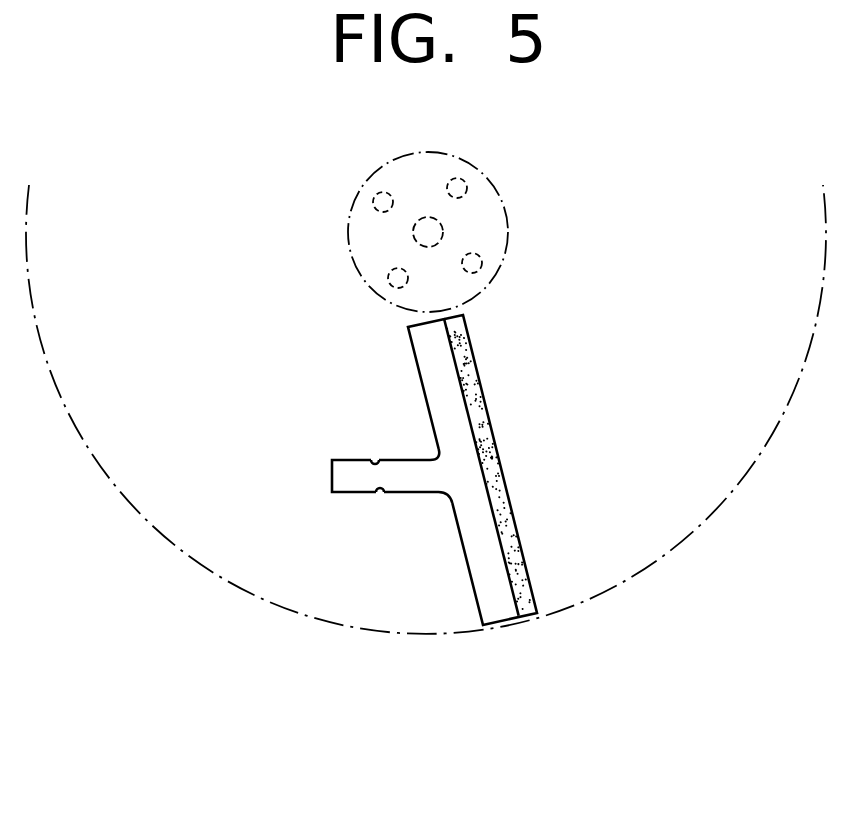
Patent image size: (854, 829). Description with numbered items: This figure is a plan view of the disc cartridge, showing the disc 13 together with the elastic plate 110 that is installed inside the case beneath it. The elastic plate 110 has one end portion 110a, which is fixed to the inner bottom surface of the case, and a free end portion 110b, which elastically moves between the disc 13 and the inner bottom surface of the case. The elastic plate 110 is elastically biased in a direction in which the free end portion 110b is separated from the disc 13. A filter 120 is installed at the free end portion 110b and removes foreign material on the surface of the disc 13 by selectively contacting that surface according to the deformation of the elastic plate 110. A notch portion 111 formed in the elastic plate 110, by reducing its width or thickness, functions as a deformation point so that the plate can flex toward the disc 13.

The disc 13 is at (648, 415).
The elastic plate 110 is at (402, 469).
The one end portion 110a is at (333, 477).
The free end portion 110b is at (473, 547).
The notch portion 111 is at (375, 458).
The filter 120 is at (492, 443).